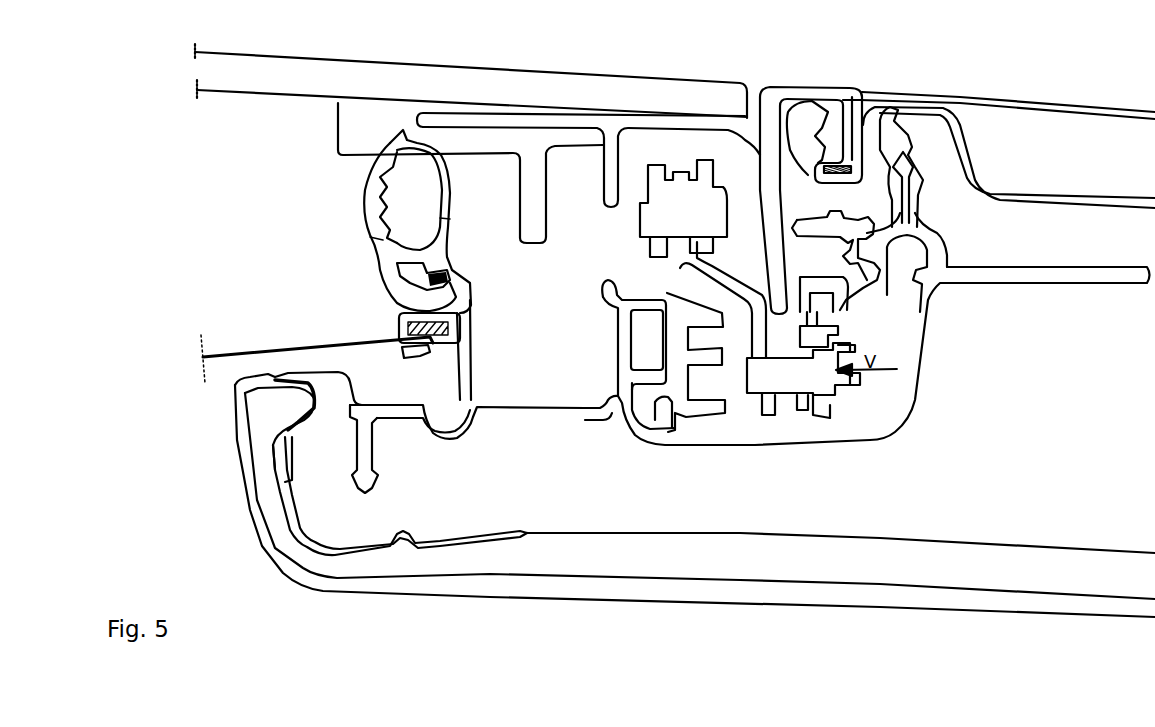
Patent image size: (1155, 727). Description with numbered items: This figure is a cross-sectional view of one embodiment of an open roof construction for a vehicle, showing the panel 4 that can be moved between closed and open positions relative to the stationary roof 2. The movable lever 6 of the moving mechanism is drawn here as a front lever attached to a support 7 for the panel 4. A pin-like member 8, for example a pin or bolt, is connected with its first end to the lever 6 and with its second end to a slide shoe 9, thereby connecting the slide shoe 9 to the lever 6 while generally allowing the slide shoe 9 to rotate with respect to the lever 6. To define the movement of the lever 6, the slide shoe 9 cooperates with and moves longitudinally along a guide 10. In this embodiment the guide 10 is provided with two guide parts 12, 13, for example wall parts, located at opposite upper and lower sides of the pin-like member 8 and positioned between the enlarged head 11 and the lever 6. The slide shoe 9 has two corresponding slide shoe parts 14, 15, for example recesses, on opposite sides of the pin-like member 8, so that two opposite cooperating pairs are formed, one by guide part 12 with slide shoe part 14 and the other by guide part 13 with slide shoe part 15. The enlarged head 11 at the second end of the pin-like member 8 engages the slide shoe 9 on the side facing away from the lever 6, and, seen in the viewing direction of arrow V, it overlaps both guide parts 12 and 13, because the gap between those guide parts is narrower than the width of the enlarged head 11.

The stationary roof 2 is at (1030, 98).
The panel 4 is at (455, 72).
The movable lever 6 is at (680, 268).
The support 7 is at (706, 168).
The pin-like member 8 is at (757, 378).
The slide shoe 9 is at (785, 405).
The guide 10 is at (803, 312).
The enlarged head 11 is at (832, 393).
The guide part 12 is at (807, 328).
The guide part 13 is at (808, 415).
The slide shoe part 14 is at (826, 336).
The slide shoe part 15 is at (825, 415).